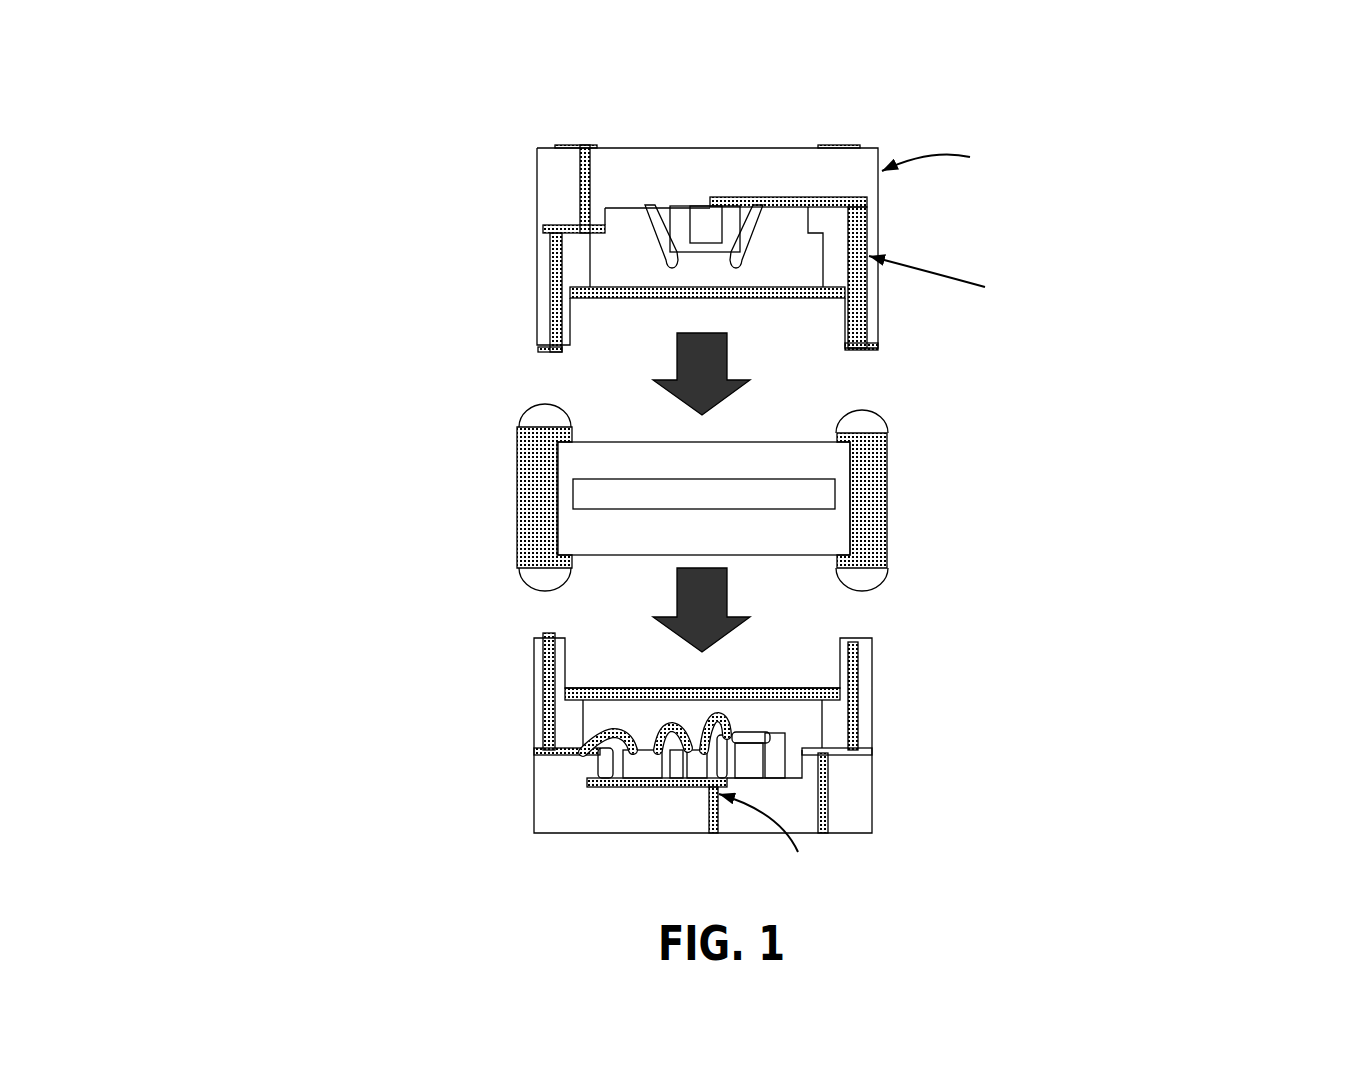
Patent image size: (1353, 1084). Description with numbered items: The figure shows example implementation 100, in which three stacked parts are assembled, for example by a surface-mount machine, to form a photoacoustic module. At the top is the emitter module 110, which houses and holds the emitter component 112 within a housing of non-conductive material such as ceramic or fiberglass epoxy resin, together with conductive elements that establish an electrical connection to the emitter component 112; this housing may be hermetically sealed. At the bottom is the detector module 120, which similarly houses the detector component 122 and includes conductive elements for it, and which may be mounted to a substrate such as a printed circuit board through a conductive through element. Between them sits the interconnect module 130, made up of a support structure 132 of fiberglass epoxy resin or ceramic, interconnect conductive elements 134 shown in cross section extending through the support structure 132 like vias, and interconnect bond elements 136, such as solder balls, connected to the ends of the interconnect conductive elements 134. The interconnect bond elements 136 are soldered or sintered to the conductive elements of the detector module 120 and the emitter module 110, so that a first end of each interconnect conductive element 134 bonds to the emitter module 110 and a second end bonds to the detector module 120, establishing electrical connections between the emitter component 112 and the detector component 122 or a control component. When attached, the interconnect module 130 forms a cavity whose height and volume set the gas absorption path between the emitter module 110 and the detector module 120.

The example implementation 100 is at (213, 67).
The emitter module 110 is at (912, 112).
The emitter component 112 is at (638, 263).
The detector module 120 is at (905, 662).
The detector component 122 is at (648, 722).
The interconnect module 130 is at (929, 422).
The support structure 132 is at (885, 489).
The interconnect conductive element 134 is at (992, 543).
The interconnect bond element 136 is at (528, 589).